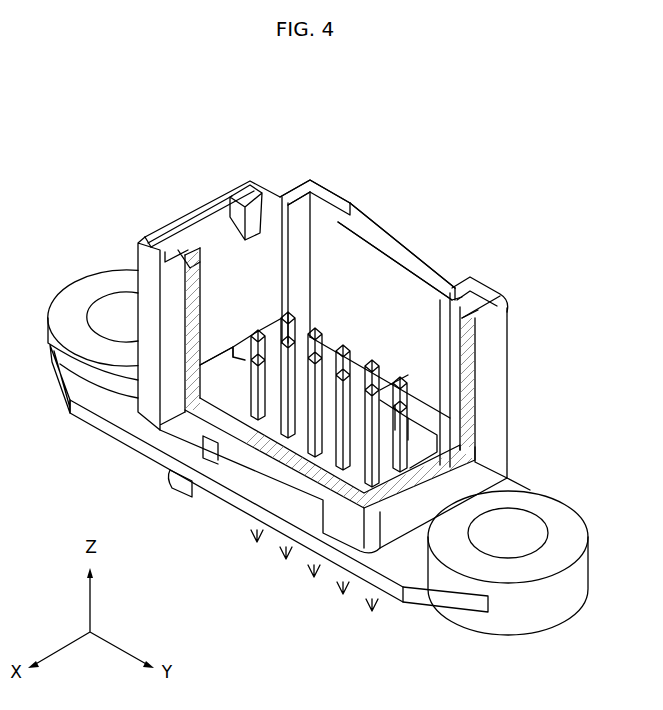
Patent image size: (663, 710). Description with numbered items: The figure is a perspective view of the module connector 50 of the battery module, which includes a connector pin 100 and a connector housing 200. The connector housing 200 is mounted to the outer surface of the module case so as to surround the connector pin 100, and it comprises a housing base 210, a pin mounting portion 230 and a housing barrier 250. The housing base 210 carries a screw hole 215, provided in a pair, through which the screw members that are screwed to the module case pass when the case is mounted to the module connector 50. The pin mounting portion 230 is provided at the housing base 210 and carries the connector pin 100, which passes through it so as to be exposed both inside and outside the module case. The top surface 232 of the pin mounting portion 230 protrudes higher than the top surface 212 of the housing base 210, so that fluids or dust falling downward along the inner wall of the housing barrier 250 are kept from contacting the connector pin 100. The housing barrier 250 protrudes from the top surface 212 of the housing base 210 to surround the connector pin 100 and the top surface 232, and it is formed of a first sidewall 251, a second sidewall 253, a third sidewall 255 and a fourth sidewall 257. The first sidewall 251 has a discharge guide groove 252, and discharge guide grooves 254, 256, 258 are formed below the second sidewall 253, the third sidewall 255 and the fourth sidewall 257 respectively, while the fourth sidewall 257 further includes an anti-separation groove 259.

The module connector 50 is at (190, 156).
The connector pin 100 is at (330, 320).
The connector housing 200 is at (403, 630).
The housing base 210 is at (247, 520).
The top surface of the housing base 212 is at (227, 397).
The screw hole 215 is at (102, 300).
The pin mounting portion 230 is at (355, 443).
The top surface of the pin mounting portion 232 is at (387, 450).
The housing barrier 250 is at (442, 256).
The first sidewall 251 is at (482, 375).
The discharge guide groove 252 is at (487, 467).
The second sidewall 253 is at (200, 232).
The discharge guide groove 254 is at (223, 350).
The third sidewall 255 is at (193, 432).
The discharge guide groove 256 is at (250, 463).
The fourth sidewall 257 is at (357, 227).
The discharge guide groove 258 is at (430, 418).
The anti-separation groove 259 is at (318, 193).